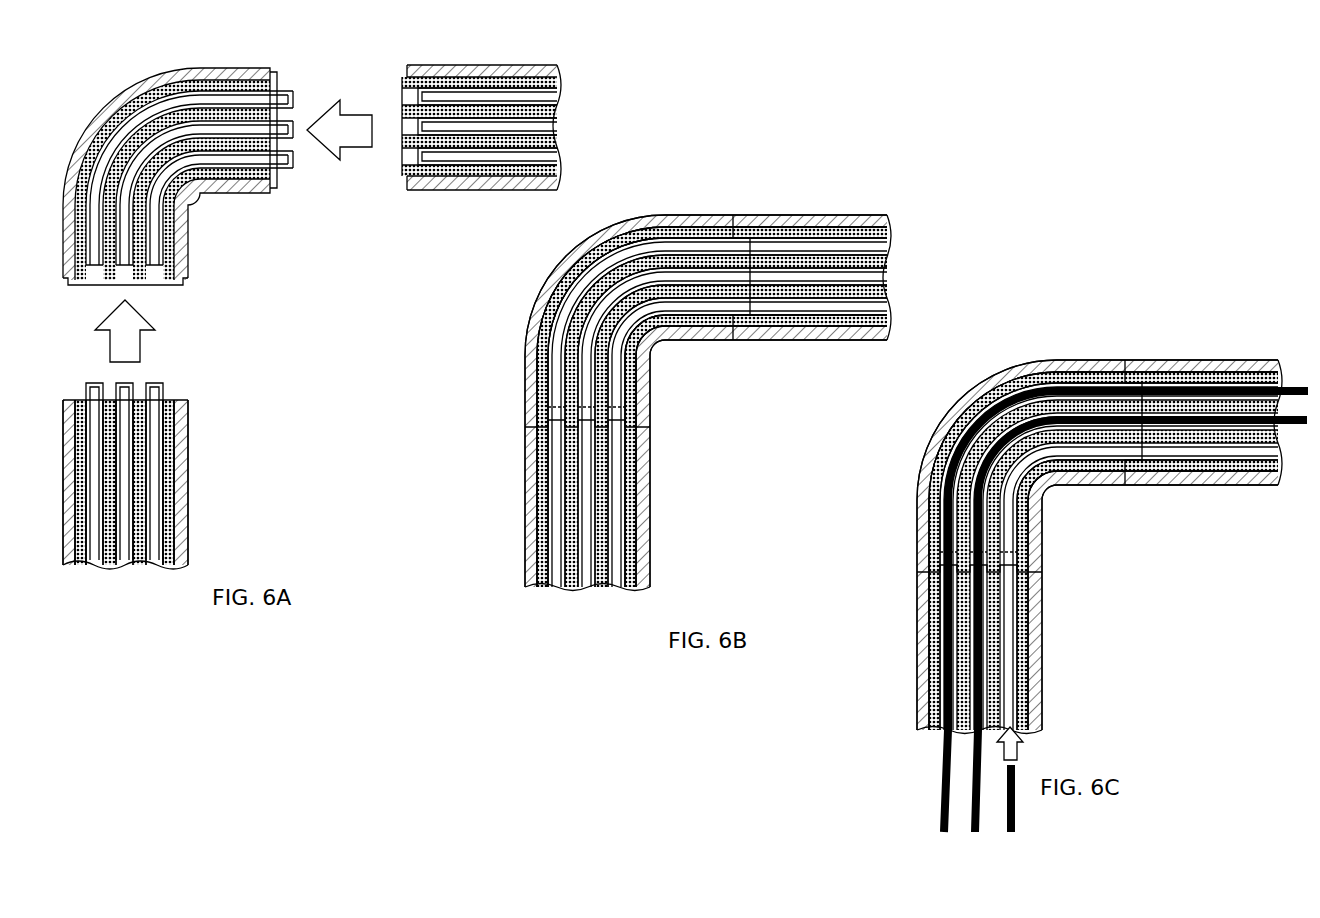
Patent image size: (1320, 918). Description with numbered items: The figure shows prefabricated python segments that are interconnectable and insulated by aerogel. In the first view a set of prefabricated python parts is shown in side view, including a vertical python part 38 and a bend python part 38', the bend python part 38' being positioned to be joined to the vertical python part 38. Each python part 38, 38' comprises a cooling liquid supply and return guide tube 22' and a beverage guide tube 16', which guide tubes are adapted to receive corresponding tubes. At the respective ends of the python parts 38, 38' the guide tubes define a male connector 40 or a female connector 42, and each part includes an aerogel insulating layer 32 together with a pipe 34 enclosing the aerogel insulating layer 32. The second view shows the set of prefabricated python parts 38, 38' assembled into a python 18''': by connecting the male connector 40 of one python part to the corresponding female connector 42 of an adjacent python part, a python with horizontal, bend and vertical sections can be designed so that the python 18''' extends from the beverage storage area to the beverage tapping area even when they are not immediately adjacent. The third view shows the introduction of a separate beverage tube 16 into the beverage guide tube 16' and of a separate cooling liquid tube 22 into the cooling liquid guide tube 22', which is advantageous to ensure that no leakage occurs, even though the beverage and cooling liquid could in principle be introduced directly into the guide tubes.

In FIG. 6A, the bend python part 38' is at (174, 159).
In FIG. 6A, the vertical python part 38 is at (332, 302).
In FIG. 6A, the female connector 42 is at (162, 288).
In FIG. 6A, the male connector 40 is at (160, 383).
In FIG. 6A, the aerogel insulating layer 32 is at (170, 425).
In FIG. 6B, the aerogel insulating layer 32 is at (637, 455).
In FIG. 6C, the aerogel insulating layer 32 is at (1025, 600).
In FIG. 6A, the pipe 34 is at (186, 460).
In FIG. 6B, the pipe 34 is at (652, 490).
In FIG. 6C, the pipe 34 is at (1040, 637).
In FIG. 6A, the cooling liquid supply and return guide tube 22' is at (112, 512).
In FIG. 6B, the cooling liquid supply and return guide tube 22' is at (705, 440).
In FIG. 6A, the beverage guide tube 16' is at (112, 523).
In FIG. 6B, the beverage guide tube 16' is at (720, 467).
In FIG. 6B, the python 18''' is at (690, 403).
In FIG. 6C, the python 18''' is at (1085, 560).
In FIG. 6C, the cooling liquid tube 22 is at (1090, 611).
In FIG. 6C, the beverage tube 16 is at (1090, 626).